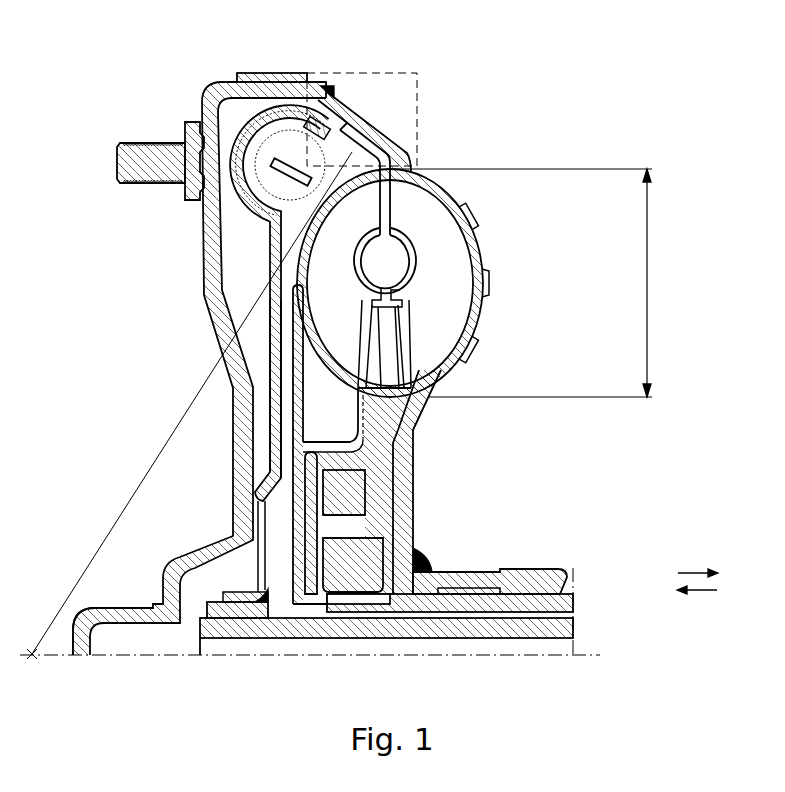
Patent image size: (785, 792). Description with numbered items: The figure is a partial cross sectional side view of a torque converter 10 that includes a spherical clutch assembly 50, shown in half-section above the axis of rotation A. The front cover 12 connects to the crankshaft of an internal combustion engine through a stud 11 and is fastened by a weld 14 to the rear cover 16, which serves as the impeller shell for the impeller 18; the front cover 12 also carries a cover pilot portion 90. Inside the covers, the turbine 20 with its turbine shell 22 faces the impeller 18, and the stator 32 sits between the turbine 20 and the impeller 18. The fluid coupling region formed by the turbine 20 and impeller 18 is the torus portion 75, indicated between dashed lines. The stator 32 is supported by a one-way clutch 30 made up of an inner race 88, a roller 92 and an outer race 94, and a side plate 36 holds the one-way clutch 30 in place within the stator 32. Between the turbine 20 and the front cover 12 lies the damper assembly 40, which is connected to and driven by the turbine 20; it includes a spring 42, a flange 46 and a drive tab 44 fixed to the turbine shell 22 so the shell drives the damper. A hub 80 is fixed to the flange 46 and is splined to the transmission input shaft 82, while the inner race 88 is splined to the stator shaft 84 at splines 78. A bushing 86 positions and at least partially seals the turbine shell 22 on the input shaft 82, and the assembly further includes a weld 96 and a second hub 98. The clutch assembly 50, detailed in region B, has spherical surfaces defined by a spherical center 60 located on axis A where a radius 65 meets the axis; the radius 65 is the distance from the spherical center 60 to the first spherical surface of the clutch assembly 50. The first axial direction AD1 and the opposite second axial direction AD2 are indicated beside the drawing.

The torque converter 10 is at (372, 360).
The stud 11 is at (155, 142).
The front cover 12 is at (207, 313).
The weld 14 is at (328, 86).
The rear cover 16 is at (365, 105).
The impeller 18 is at (440, 262).
The turbine 20 is at (365, 222).
The turbine shell 22 is at (382, 166).
The one-way clutch 30 is at (372, 516).
The stator 32 is at (395, 403).
The side plate 36 is at (328, 475).
The damper assembly 40 is at (228, 206).
The spring 42 is at (290, 128).
The drive tab 44 is at (268, 215).
The flange 46 is at (270, 258).
The clutch assembly 50 is at (393, 128).
The spherical center 60 is at (33, 653).
The radius 65 is at (158, 457).
The torus portion 75 is at (648, 290).
The splines 78 is at (233, 620).
The hub 80 is at (207, 607).
The input shaft 82 is at (392, 639).
The stator shaft 84 is at (428, 613).
The bushing 86 is at (467, 595).
The inner race 88 is at (365, 578).
The cover pilot portion 90 is at (120, 607).
The roller 92 is at (366, 527).
The outer race 94 is at (357, 506).
The weld 96 is at (433, 557).
The hub 98 is at (495, 569).
The axis of rotation A is at (535, 656).
The detail region B is at (395, 73).
The first axial direction AD1 is at (684, 573).
The second axial direction AD2 is at (700, 591).